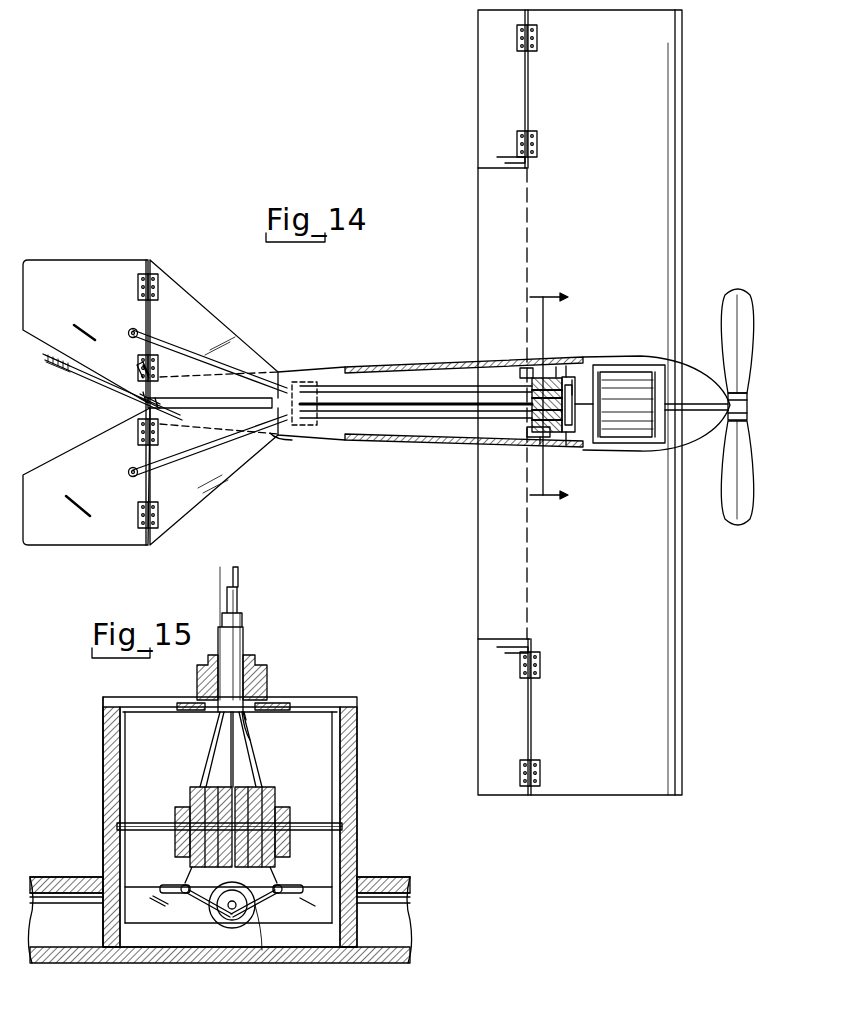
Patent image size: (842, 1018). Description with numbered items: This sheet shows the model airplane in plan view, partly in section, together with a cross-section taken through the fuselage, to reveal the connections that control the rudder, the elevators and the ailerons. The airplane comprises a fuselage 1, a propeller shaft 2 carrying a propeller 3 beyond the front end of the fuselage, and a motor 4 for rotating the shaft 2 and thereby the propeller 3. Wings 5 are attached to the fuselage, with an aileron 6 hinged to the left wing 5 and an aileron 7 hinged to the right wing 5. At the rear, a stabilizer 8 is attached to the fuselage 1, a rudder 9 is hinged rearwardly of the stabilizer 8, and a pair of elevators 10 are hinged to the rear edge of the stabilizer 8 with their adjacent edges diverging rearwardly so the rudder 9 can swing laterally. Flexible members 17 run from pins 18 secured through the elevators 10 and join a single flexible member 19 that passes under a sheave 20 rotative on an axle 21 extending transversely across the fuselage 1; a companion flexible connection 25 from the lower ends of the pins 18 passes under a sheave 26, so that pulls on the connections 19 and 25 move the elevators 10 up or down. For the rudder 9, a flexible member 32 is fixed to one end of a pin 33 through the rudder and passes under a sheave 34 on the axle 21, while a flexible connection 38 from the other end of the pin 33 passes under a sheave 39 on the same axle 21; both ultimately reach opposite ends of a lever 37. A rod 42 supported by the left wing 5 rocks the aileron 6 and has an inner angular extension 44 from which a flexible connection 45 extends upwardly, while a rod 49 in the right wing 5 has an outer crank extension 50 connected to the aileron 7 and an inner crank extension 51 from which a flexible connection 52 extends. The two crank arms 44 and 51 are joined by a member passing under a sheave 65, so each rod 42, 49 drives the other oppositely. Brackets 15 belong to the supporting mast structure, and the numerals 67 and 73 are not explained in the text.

In FIG. 14, the fuselage 1 is at (450, 438).
In FIG. 15, the fuselage 1 is at (357, 768).
In FIG. 14, the propeller shaft 2 is at (748, 407).
In FIG. 14, the propeller 3 is at (744, 292).
In FIG. 14, the motor 4 is at (632, 437).
In FIG. 14, the wings 5 is at (676, 228).
In FIG. 15, the wings 5 is at (60, 877).
In FIG. 14, the aileron 6 is at (487, 44).
In FIG. 14, the aileron 7 is at (500, 785).
In FIG. 14, the stabilizer 8 is at (205, 488).
In FIG. 14, the rudder 9 is at (70, 370).
In FIG. 14, the elevators 10 is at (93, 266).
In FIG. 14, the brackets 15 is at (549, 395).
In FIG. 14, the flexible members 17 is at (238, 352).
In FIG. 14, the pins 18 is at (128, 336).
In FIG. 14, the flexible member 19 is at (478, 388).
In FIG. 15, the flexible member 19 is at (215, 752).
In FIG. 14, the sheave 20 is at (573, 392).
In FIG. 15, the sheave 20 is at (229, 770).
In FIG. 14, the axle 21 is at (558, 366).
In FIG. 15, the axle 21 is at (305, 823).
In FIG. 14, the flexible connection 25 is at (510, 417).
In FIG. 15, the flexible connection 25 is at (249, 758).
In FIG. 14, the sheave 26 is at (576, 407).
In FIG. 15, the sheave 26 is at (256, 773).
In FIG. 14, the flexible member 32 is at (295, 372).
In FIG. 15, the flexible member 32 is at (214, 716).
In FIG. 14, the pin 33 is at (138, 408).
In FIG. 14, the sheave 34 is at (534, 384).
In FIG. 15, the lever 37 is at (192, 850).
In FIG. 14, the flexible connection 38 is at (300, 440).
In FIG. 15, the flexible connection 38 is at (248, 736).
In FIG. 14, the sheave 39 is at (538, 443).
In FIG. 15, the sheave 39 is at (272, 850).
In FIG. 14, the rod 42 is at (524, 368).
In FIG. 15, the rod 42 is at (170, 885).
In FIG. 14, the angular extension 44 is at (568, 370).
In FIG. 15, the angular extension 44 is at (178, 898).
In FIG. 15, the flexible connection 45 is at (206, 905).
In FIG. 14, the rod 49 is at (527, 432).
In FIG. 15, the rod 49 is at (296, 885).
In FIG. 14, the crank extension 50 is at (507, 652).
In FIG. 14, the crank extension 51 is at (566, 443).
In FIG. 15, the crank extension 51 is at (285, 900).
In FIG. 15, the flexible connection 52 is at (278, 878).
In FIG. 15, the sheave 65 is at (232, 930).
In FIG. 15, the link 67 is at (258, 928).
In FIG. 14, the bracket 73 is at (507, 163).